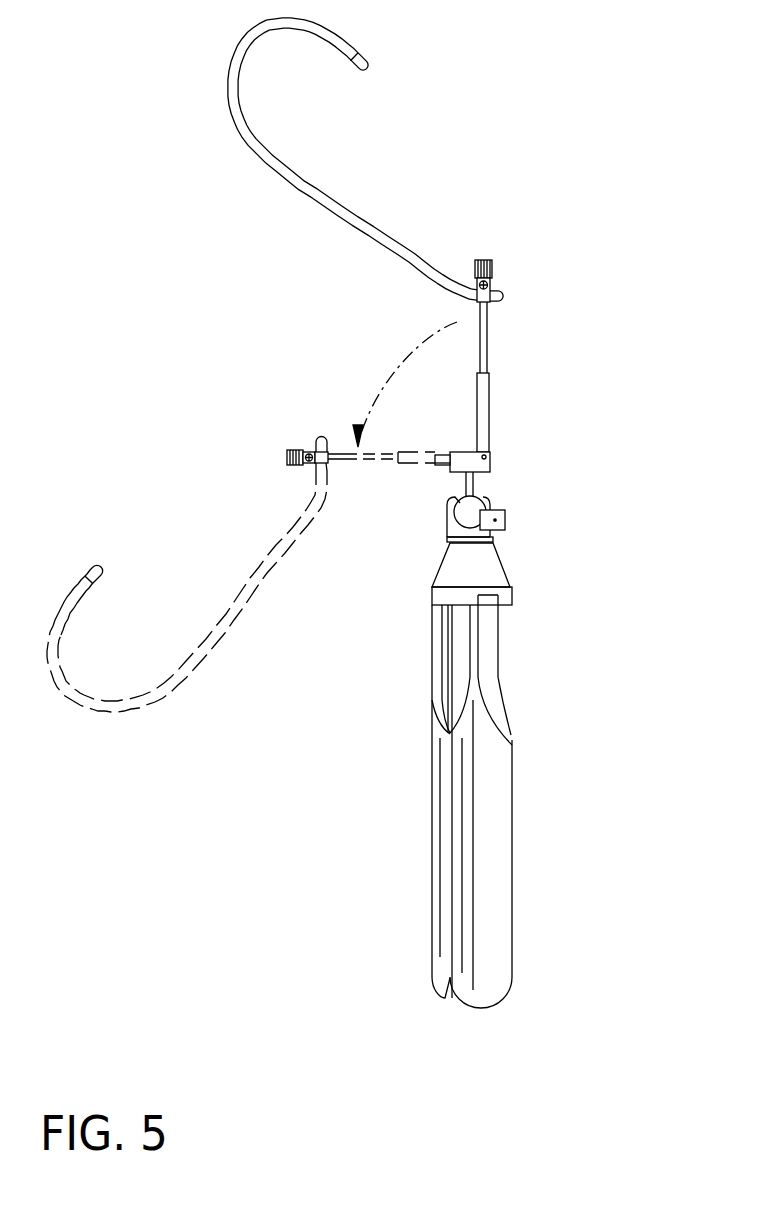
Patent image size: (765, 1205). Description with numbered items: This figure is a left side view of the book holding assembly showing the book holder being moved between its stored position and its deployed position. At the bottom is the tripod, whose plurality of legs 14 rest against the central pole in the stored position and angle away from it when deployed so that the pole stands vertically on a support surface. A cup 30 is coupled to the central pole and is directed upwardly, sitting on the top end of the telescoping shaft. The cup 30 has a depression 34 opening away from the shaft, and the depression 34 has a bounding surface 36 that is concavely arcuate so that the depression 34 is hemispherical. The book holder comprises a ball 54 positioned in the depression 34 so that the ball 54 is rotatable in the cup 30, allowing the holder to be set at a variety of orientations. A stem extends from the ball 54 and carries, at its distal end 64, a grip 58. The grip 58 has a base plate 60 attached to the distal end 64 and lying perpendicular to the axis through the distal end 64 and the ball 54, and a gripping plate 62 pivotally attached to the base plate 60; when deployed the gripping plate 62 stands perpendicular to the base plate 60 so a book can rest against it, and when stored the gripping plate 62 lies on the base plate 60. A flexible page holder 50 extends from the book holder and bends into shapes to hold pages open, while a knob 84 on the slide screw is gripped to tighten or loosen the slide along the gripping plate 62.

The legs 14 is at (510, 792).
The cup 30 is at (447, 525).
The depression 34 is at (463, 498).
The bounding surface 36 is at (460, 503).
The flexible page holder 50 is at (360, 247).
The ball 54 is at (485, 499).
The grip 58 is at (506, 420).
The base plate 60 is at (460, 455).
The gripping plate 62 is at (489, 398).
The distal end 64 is at (470, 471).
The knob 84 is at (478, 260).